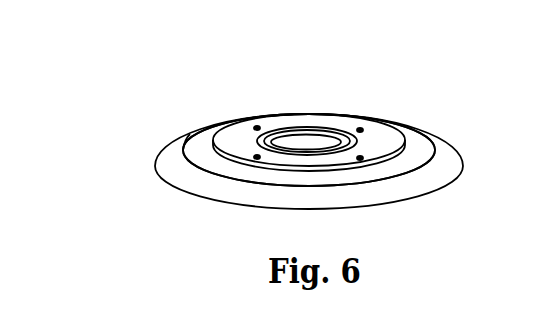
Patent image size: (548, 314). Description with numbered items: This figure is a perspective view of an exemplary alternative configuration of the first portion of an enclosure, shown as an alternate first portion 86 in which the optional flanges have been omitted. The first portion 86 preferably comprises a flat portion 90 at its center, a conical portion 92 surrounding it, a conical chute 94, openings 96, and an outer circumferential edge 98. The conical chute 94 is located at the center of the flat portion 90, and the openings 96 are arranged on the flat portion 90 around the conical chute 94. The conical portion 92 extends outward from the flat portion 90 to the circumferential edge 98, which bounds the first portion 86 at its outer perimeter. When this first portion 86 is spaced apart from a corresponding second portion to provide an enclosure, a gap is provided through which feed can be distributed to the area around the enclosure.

The first portion 86 is at (406, 124).
The flat portion 90 is at (305, 118).
The conical portion 92 is at (203, 150).
The conical chute 94 is at (326, 131).
The openings 96 is at (262, 127).
The circumferential edge 98 is at (155, 167).